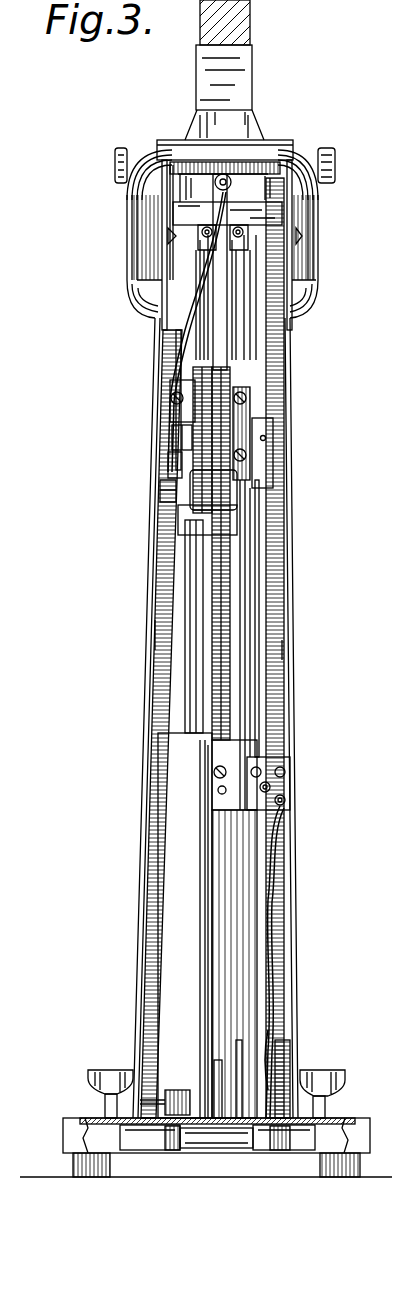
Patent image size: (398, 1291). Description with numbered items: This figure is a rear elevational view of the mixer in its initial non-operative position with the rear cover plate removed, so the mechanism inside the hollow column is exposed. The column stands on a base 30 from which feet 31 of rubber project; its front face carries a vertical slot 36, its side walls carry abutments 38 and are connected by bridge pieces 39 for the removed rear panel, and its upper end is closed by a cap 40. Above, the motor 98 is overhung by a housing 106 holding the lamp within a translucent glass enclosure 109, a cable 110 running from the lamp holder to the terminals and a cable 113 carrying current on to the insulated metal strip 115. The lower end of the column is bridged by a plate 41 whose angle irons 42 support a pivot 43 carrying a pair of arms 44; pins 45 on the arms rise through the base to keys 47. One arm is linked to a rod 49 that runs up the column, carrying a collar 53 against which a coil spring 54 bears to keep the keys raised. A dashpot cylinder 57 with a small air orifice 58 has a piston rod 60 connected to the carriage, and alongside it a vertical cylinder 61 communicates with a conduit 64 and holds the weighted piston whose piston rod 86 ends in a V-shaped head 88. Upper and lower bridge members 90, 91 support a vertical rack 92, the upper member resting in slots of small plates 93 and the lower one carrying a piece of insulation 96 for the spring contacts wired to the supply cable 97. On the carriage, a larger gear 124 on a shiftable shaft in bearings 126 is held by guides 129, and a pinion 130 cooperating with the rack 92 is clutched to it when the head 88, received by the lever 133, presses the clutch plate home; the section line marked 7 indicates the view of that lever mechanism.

The translucent glass enclosure 109 is at (252, 32).
The housing 106 is at (243, 97).
The cap 40 is at (176, 148).
The cable 110 is at (232, 190).
The vertical slot 36 is at (242, 163).
The motor 98 is at (318, 275).
The abutments 38 is at (168, 182).
The upper bridge member 90 is at (255, 222).
The small plates 93 is at (170, 227).
The vertical rack 92 is at (225, 357).
The cable 113 is at (178, 338).
The guides 129 is at (190, 355).
The piston rod 60 is at (233, 706).
The bearings 126 is at (240, 418).
The pinion 130 is at (175, 416).
The larger gear 124 is at (186, 431).
The lever 133 is at (263, 456).
The section line 7 is at (275, 452).
The head 88 is at (170, 456).
The bridge pieces 39 is at (161, 488).
The piston rod 86 is at (178, 522).
The insulated metal strip 115 is at (193, 560).
The rod 49 is at (277, 686).
The lower bridge member 91 is at (226, 767).
The piece of insulation 96 is at (282, 786).
The vertical cylinder 61 is at (165, 783).
The dashpot cylinder 57 is at (242, 953).
The cable 97 is at (272, 857).
The orifice 58 is at (242, 1056).
The plate 41 is at (220, 1110).
The collar 53 is at (280, 1043).
The coil spring 54 is at (283, 1068).
The keys 47 is at (97, 1073).
The pins 45 is at (110, 1102).
The conduit 64 is at (157, 1102).
The base 30 is at (345, 1118).
The feet 31 is at (85, 1163).
The angle irons 42 is at (170, 1128).
The arms 44 is at (183, 1137).
The pivot 43 is at (228, 1137).